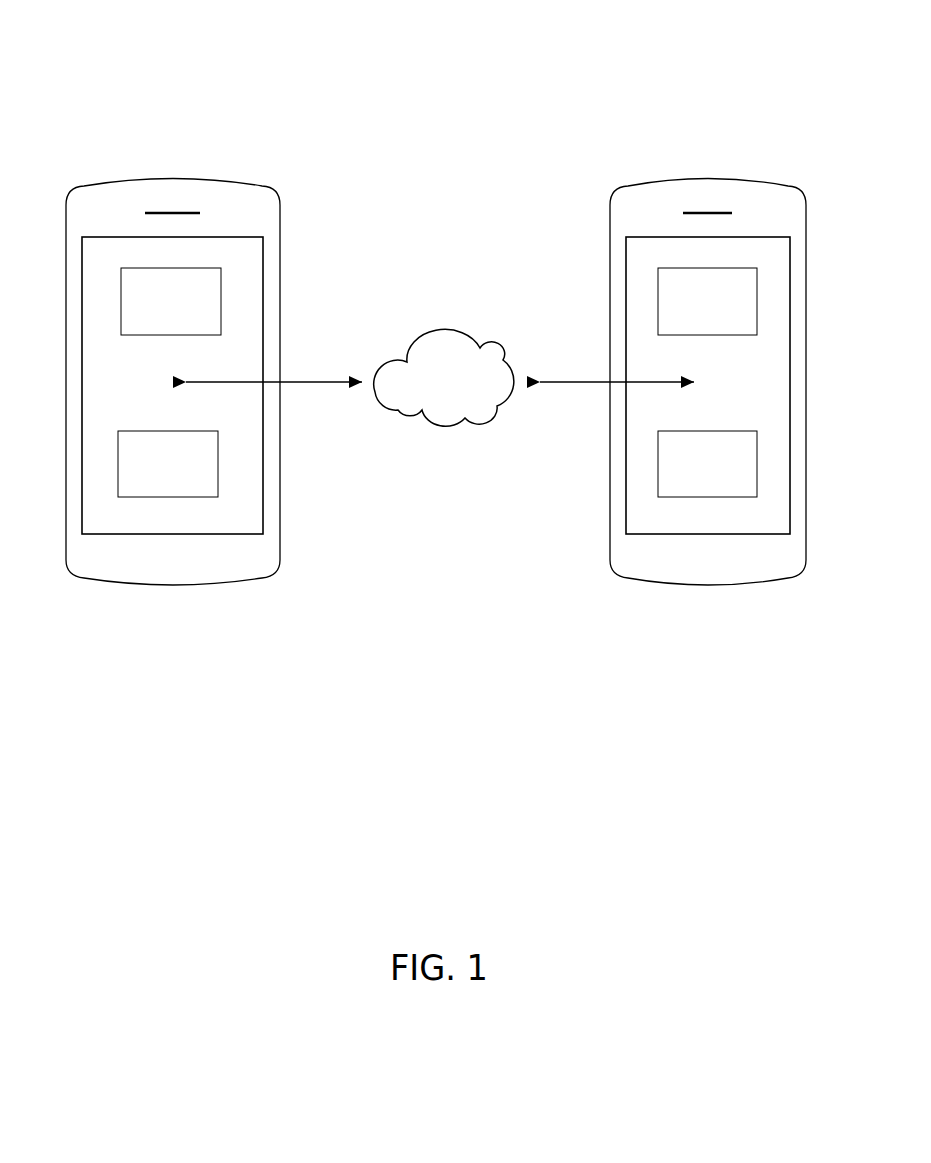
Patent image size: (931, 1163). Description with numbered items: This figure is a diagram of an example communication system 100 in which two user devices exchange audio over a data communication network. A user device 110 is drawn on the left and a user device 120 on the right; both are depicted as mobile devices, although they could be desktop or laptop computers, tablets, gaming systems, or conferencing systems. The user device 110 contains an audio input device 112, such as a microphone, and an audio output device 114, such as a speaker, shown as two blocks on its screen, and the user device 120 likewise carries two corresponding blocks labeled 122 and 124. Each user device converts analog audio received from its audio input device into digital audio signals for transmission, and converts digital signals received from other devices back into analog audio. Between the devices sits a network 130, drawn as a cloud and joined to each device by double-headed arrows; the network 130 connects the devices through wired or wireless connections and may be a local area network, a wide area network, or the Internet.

The communication system 100 is at (447, 100).
The user device 110 is at (173, 406).
The audio input device 112 is at (171, 301).
The audio output device 114 is at (168, 464).
The user device 120 is at (708, 406).
The second application 122 is at (707, 301).
The second data store 124 is at (707, 464).
The network 130 is at (444, 410).